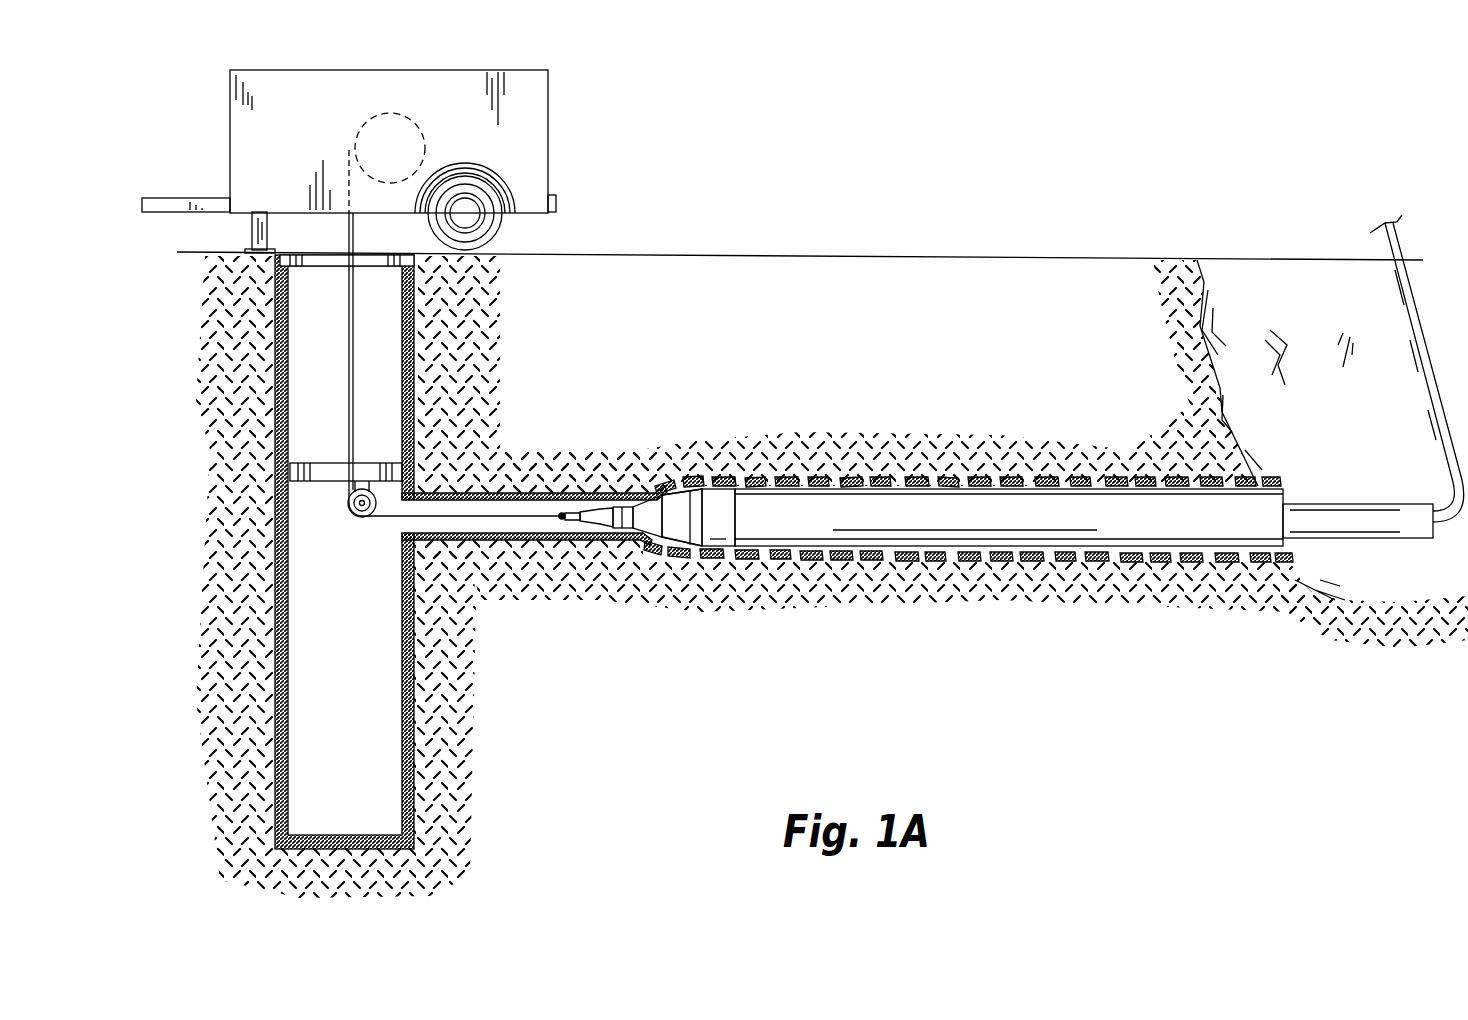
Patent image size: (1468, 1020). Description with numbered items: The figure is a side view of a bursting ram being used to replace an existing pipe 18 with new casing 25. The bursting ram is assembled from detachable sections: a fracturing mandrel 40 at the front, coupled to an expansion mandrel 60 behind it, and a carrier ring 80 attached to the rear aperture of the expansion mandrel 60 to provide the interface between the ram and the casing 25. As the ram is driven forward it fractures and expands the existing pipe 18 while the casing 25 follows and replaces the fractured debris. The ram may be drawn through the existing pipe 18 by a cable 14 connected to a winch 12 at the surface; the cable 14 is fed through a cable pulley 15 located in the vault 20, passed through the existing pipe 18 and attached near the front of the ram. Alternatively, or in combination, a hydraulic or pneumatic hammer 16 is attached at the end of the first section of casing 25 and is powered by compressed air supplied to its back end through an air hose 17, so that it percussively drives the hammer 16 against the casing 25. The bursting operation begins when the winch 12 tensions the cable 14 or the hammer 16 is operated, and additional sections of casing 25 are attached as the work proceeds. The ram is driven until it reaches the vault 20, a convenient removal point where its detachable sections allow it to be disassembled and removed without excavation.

The winch 12 is at (530, 120).
The cable 14 is at (345, 375).
The cable pulley 15 is at (317, 473).
The pneumatic hammer 16 is at (1365, 522).
The air hose 17 is at (1407, 348).
The existing pipe 18 is at (515, 492).
The vault 20 is at (317, 307).
The casing 25 is at (933, 507).
The fracturing mandrel 40 is at (644, 518).
The expansion mandrel 60 is at (682, 507).
The carrier ring 80 is at (717, 513).